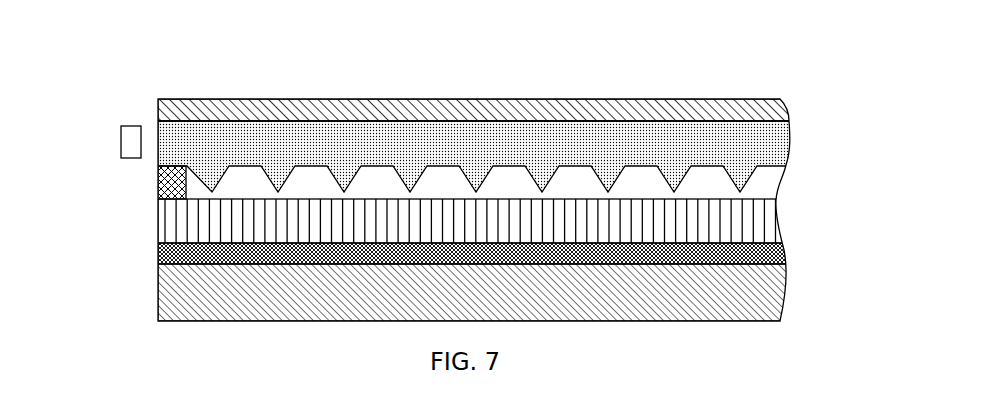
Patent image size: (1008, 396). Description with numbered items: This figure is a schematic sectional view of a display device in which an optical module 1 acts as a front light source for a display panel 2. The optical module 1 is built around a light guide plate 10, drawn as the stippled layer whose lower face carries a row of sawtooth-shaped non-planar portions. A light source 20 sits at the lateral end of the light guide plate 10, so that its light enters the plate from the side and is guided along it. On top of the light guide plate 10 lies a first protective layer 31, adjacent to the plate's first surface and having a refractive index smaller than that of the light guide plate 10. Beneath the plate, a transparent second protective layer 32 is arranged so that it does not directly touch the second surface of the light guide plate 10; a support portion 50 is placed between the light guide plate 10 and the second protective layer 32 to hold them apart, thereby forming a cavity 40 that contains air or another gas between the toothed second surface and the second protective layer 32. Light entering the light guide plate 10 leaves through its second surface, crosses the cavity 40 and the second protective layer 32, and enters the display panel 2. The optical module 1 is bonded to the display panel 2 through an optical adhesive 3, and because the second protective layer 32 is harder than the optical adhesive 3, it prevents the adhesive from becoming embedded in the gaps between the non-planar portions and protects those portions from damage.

The optical module 1 is at (109, 93).
The display panel 2 is at (170, 306).
The optical adhesive 3 is at (173, 257).
The light guide plate 10 is at (776, 150).
The light source 20 is at (130, 128).
The first protective layer 31 is at (776, 110).
The second protective layer 32 is at (747, 228).
The cavity 40 is at (250, 187).
The support portion 50 is at (173, 190).